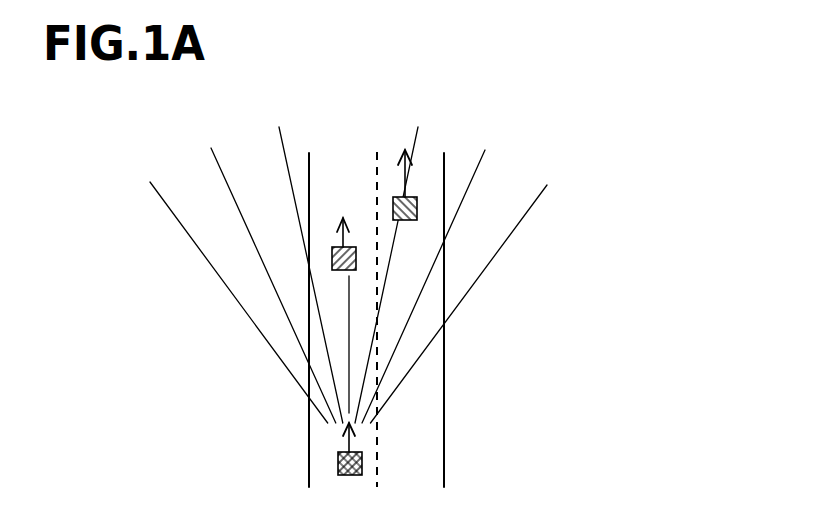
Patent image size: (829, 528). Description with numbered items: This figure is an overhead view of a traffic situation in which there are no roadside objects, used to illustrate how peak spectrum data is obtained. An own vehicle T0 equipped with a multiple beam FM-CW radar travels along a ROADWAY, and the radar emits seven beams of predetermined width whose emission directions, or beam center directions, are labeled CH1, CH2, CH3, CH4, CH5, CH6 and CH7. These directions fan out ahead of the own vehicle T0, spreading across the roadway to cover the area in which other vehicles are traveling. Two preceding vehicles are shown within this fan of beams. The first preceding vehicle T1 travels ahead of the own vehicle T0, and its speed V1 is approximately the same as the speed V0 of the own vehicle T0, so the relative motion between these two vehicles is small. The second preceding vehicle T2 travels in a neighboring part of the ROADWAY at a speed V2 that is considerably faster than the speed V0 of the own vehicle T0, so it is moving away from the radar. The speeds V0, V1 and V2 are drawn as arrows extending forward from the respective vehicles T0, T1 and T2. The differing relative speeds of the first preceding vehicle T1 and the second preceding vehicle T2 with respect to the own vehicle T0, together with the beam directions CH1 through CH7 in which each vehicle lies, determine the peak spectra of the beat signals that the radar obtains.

The beam emission direction CH1 is at (219, 286).
The beam emission direction CH2 is at (259, 268).
The beam emission direction CH3 is at (296, 257).
The beam emission direction CH4 is at (349, 213).
The beam emission direction CH5 is at (401, 258).
The beam emission direction CH6 is at (441, 270).
The beam emission direction CH7 is at (477, 287).
The own vehicle T0 is at (338, 460).
The speed of own vehicle V0 is at (343, 447).
The first preceding vehicle T1 is at (332, 256).
The speed of first preceding vehicle V1 is at (332, 241).
The second preceding vehicle T2 is at (417, 210).
The speed of second preceding vehicle V2 is at (407, 187).
The roadway with lane markings ROADWAY is at (427, 402).